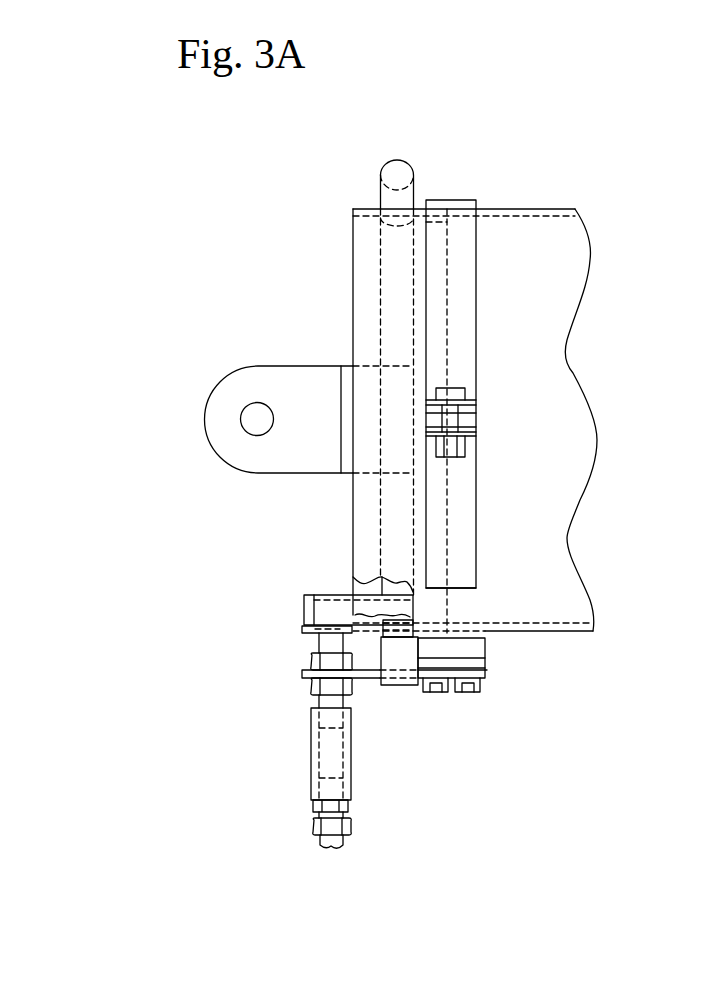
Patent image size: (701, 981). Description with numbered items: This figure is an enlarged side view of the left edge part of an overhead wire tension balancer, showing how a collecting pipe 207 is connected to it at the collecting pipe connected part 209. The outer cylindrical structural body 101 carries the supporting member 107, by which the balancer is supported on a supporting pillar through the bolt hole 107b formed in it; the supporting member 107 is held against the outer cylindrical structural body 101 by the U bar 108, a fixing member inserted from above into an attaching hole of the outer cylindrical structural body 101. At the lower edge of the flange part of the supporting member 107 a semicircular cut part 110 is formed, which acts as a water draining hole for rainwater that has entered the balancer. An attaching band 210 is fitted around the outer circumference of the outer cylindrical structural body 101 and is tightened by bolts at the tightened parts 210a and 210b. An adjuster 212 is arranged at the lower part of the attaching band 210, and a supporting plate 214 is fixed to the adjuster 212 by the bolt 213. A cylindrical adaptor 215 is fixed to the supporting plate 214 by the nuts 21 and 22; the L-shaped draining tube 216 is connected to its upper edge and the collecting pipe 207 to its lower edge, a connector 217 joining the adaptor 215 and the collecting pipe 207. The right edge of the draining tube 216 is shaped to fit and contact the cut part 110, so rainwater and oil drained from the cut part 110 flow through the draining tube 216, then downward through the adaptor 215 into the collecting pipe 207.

The outer cylindrical structural body 101 is at (593, 631).
The supporting member 107 is at (307, 378).
The bolt hole 107b is at (252, 417).
The U bar 108 is at (396, 170).
The cut part 110 is at (438, 608).
The attaching band 210 is at (462, 250).
The tightened part 210a is at (700, 376).
The tightened part 210b is at (483, 430).
The adjuster 212 is at (473, 650).
The bolt 213 is at (487, 695).
The supporting plate 214 is at (358, 676).
The cylindrical adaptor 215 is at (312, 652).
The draining tube 216 is at (308, 615).
The connector 217 is at (314, 826).
The collecting pipe 207 is at (337, 840).
The collecting pipe connected part 209 is at (302, 699).
The nut 21 is at (305, 665).
The nut 22 is at (300, 688).